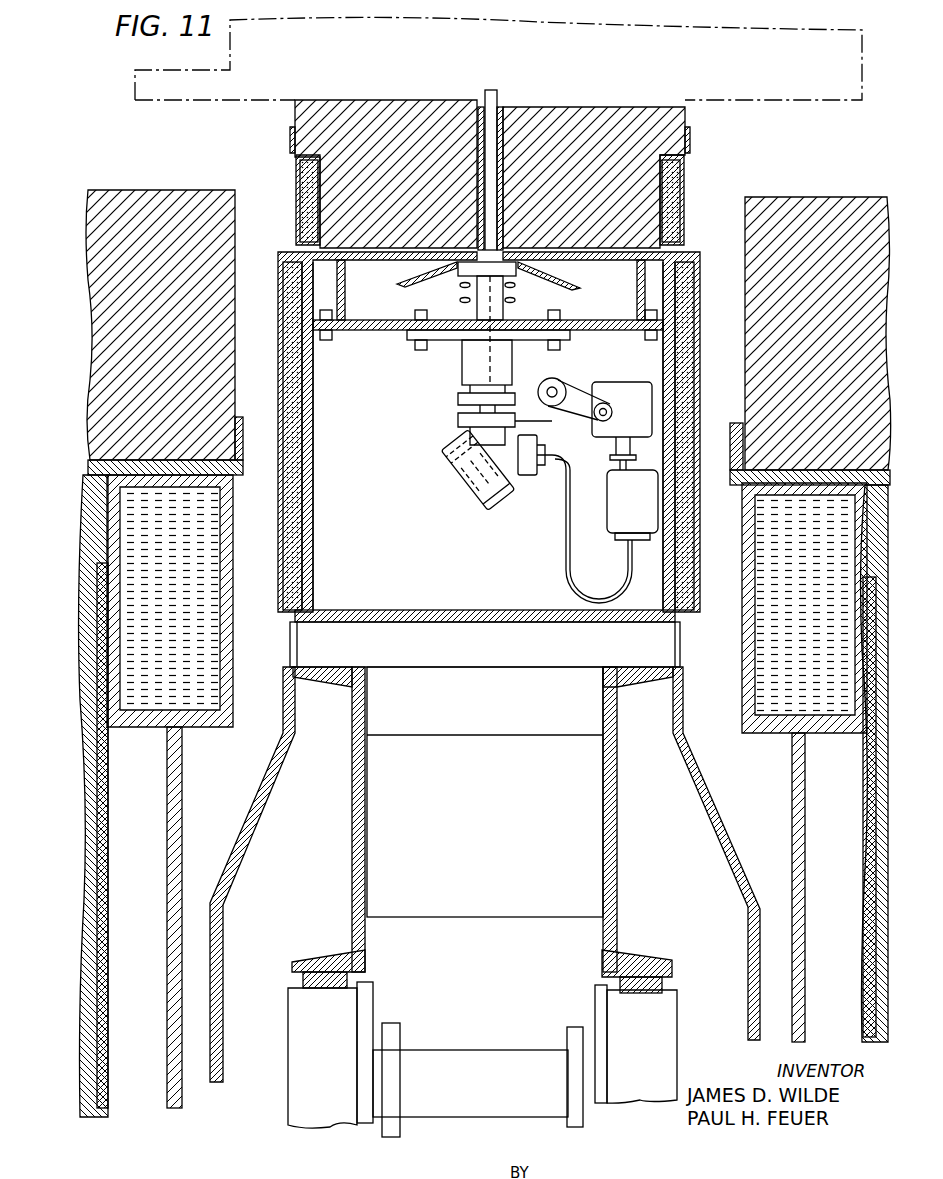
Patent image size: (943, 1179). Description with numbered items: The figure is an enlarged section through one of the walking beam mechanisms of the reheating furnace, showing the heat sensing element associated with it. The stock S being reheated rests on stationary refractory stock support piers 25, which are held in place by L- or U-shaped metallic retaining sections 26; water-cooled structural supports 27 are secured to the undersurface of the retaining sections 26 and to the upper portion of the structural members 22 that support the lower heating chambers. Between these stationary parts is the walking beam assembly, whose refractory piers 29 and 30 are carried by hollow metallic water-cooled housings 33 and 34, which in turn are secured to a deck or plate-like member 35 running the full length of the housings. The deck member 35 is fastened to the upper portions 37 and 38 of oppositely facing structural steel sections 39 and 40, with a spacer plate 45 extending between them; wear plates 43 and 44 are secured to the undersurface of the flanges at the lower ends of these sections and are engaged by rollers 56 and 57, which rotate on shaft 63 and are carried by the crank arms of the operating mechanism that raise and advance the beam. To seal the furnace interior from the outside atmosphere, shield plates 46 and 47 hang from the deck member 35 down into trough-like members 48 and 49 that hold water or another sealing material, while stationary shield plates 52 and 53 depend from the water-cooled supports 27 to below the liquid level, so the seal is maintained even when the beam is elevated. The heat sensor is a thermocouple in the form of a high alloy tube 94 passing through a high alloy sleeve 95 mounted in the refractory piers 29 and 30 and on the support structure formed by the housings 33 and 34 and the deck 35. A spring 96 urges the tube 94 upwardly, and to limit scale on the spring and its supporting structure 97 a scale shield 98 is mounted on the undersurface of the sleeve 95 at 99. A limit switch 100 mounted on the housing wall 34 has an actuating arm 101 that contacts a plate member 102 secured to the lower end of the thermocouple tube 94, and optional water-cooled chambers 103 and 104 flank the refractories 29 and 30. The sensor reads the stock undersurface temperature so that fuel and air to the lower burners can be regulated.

The stock S is at (704, 80).
The structural members 22 is at (108, 977).
The stationary refractory stock support piers 25 is at (152, 190).
The metallic retaining sections 26 is at (246, 430).
The water-cooled structural supports 27 is at (233, 625).
The refractory pier 29 is at (302, 118).
The refractory pier 30 is at (678, 117).
The water-cooled housing 33 is at (313, 470).
The water-cooled housing 34 is at (658, 598).
The deck or plate-like member 35 is at (505, 656).
The upper portion of structural steel section 37 is at (328, 690).
The upper portion of structural steel section 38 is at (650, 688).
The structural steel section 39 is at (352, 822).
The structural steel section 40 is at (617, 836).
The wear plate 43 is at (298, 970).
The wear plate 44 is at (668, 982).
The spacer plate 45 is at (485, 792).
The shield plate 46 is at (252, 818).
The shield plate 47 is at (728, 830).
The trough-like member 48 is at (97, 935).
The trough-like member 49 is at (866, 900).
The stationary shield plate 52 is at (167, 838).
The stationary shield plate 53 is at (806, 812).
The roller 56 is at (334, 1084).
The roller 57 is at (652, 1037).
The shaft 63 is at (482, 1084).
The high alloy tube 94 is at (491, 90).
The high alloy sleeve 95 is at (480, 130).
The spring 96 is at (514, 290).
The spring and supporting structure 97 is at (372, 326).
The scale shield 98 is at (565, 283).
The scale shield mounting 99 is at (428, 272).
The limit switch 100 is at (615, 382).
The actuating arm 101 is at (575, 390).
The plate member 102 is at (520, 405).
The water-cooled chamber 103 is at (297, 216).
The water-cooled chamber 104 is at (686, 190).